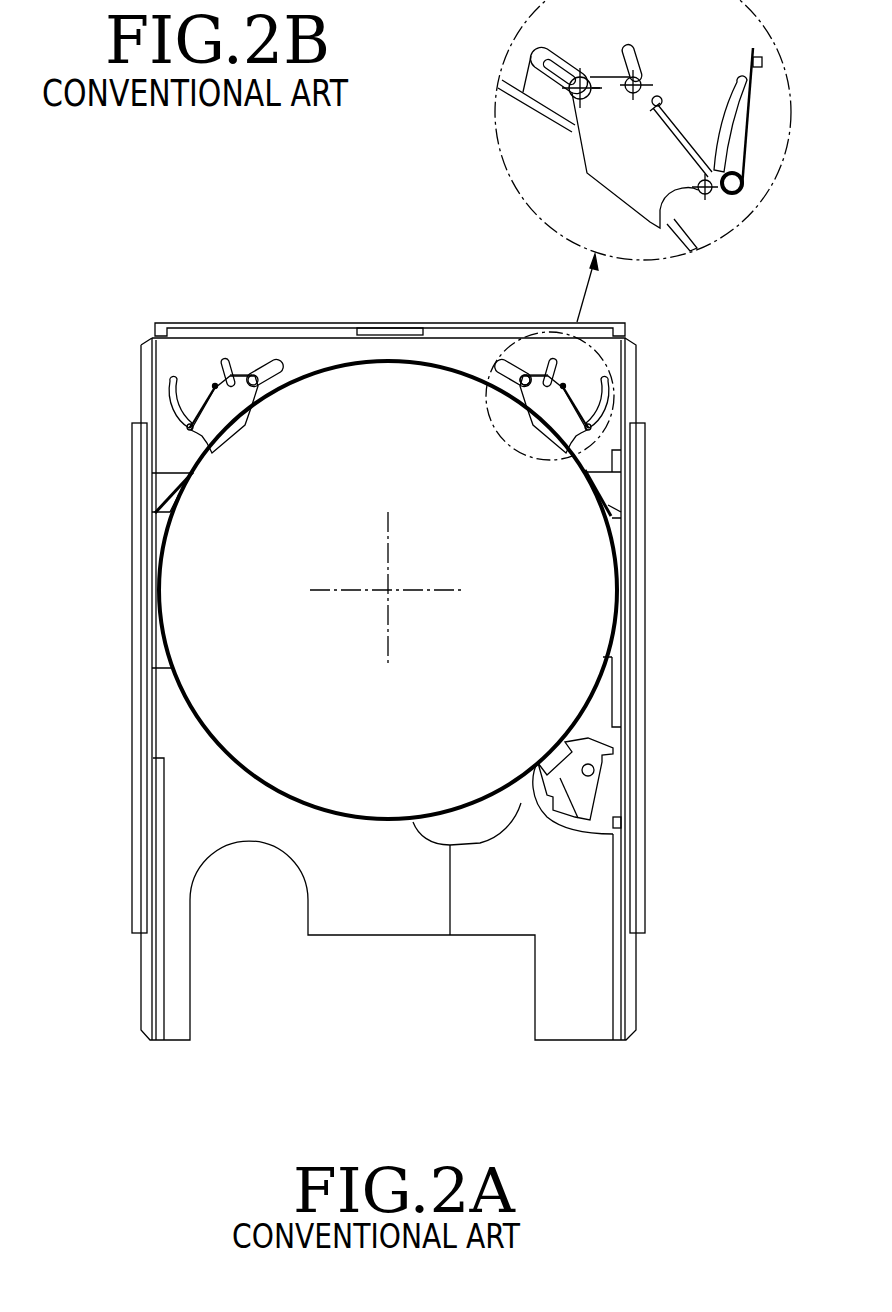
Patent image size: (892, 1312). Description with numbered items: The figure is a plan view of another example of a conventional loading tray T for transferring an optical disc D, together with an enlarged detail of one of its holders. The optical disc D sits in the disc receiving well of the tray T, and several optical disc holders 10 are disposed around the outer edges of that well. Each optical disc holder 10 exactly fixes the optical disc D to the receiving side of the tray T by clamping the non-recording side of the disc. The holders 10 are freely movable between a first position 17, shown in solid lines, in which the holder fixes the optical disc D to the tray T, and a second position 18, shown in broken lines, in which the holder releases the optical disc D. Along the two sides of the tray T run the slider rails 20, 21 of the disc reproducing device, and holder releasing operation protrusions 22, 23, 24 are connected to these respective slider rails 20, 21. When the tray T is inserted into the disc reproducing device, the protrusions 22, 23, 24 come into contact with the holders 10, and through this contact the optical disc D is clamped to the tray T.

In FIG. 2A, the optical disc holder 10 is at (227, 413).
In FIG. 2B, the optical disc holder 10 is at (603, 165).
In FIG. 2A, the first position 17 is at (520, 387).
In FIG. 2A, the second position 18 is at (485, 378).
In FIG. 2A, the slider rail 20 is at (128, 655).
In FIG. 2A, the slider rail 21 is at (644, 700).
In FIG. 2A, the holder releasing operation protrusion 22 is at (165, 487).
In FIG. 2A, the holder releasing operation protrusion 23 is at (604, 486).
In FIG. 2A, the holder releasing operation protrusion 24 is at (622, 822).
In FIG. 2A, the optical disc D is at (330, 388).
In FIG. 2A, the tray T is at (660, 570).